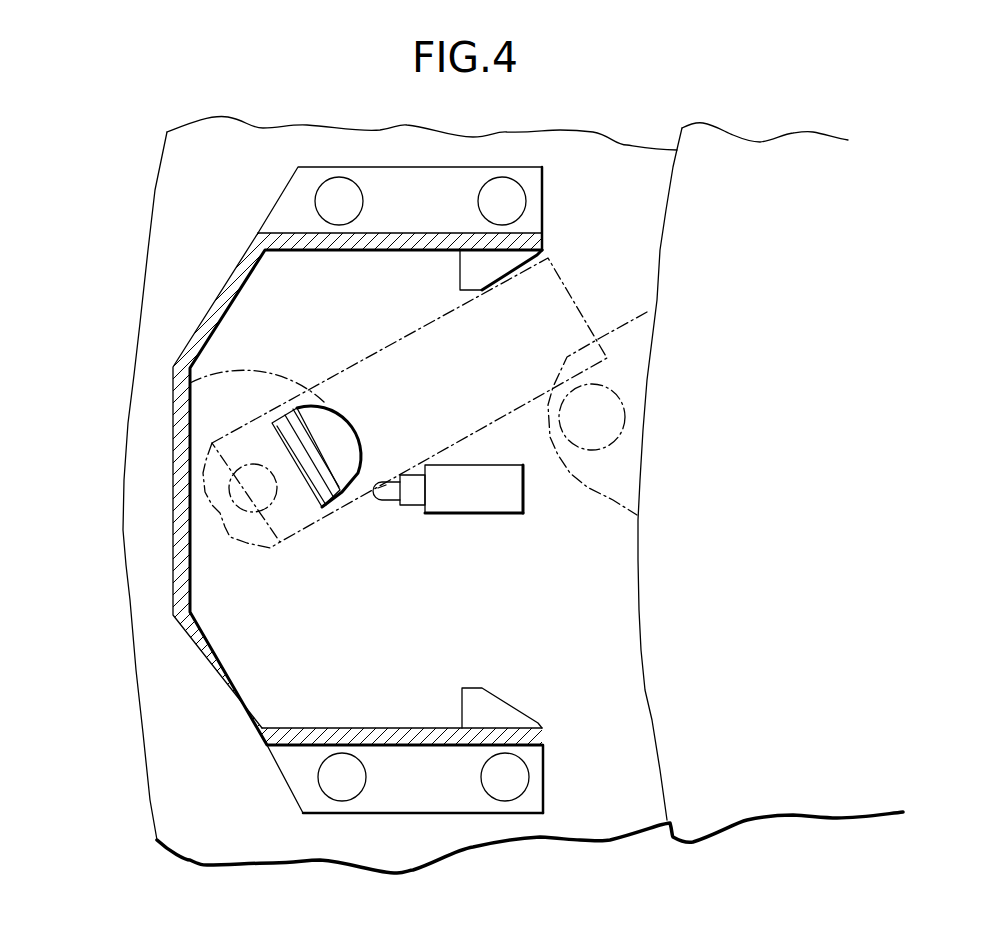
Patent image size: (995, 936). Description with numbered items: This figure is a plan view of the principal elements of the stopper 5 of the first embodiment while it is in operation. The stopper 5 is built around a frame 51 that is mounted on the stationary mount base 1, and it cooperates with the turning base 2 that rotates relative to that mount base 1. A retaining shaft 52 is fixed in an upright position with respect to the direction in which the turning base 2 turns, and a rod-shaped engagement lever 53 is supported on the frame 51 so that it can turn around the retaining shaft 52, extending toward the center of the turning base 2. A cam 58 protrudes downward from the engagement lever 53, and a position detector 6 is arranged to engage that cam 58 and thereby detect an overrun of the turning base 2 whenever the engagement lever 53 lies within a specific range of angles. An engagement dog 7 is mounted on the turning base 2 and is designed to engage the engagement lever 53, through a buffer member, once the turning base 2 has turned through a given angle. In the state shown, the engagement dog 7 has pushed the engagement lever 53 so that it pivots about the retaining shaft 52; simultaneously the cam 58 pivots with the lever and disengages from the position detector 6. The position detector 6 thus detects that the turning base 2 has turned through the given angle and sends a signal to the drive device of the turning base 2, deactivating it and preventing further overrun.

The mount base 1 is at (150, 218).
The turning base 2 is at (660, 773).
The stopper 5 is at (192, 330).
The position detector 6 is at (490, 502).
The engagement dog 7 is at (620, 433).
The frame 51 is at (180, 463).
The retaining shaft 52 is at (250, 503).
The engagement lever 53 is at (173, 383).
The cam 58 is at (305, 417).